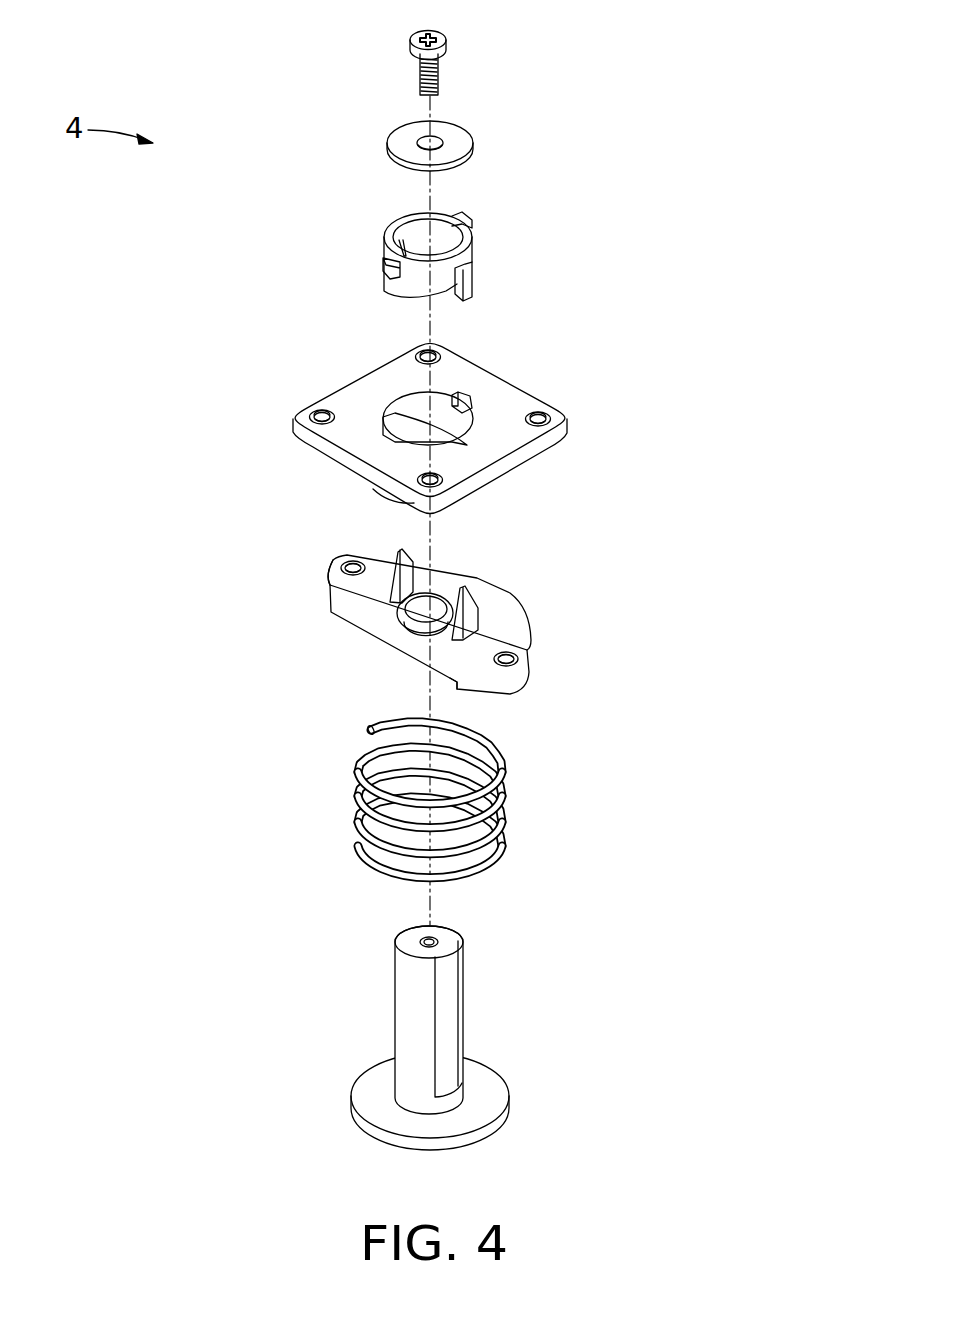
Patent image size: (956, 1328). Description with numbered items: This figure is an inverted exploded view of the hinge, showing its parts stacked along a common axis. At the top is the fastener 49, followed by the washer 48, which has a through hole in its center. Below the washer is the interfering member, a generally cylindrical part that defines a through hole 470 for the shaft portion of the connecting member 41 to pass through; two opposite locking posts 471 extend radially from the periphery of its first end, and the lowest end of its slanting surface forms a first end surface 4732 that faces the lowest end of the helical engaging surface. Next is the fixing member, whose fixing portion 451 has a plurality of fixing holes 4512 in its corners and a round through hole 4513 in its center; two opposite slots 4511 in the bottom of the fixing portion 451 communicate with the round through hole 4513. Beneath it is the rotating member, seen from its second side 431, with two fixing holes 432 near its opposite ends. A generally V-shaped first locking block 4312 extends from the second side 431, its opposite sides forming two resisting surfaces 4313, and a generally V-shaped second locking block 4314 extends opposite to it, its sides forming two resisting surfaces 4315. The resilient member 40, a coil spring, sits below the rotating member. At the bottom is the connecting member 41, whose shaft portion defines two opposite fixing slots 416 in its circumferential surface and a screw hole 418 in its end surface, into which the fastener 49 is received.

The fastener 49 is at (444, 54).
The washer 48 is at (455, 136).
The through hole 470 is at (422, 233).
The locking posts 471 is at (384, 266).
The first end surface 4732 is at (470, 296).
The fixing portion 451 is at (433, 402).
The slots 4511 is at (465, 396).
The fixing holes 4512 is at (320, 411).
The round through hole 4513 is at (398, 414).
The second side 431 is at (417, 602).
The first locking block 4312 is at (398, 570).
The resisting surfaces 4313 is at (333, 580).
The second locking block 4314 is at (478, 600).
The resisting surfaces 4315 is at (465, 637).
The fixing holes 432 is at (522, 662).
The resilient member 40 is at (507, 803).
The connecting member 41 is at (467, 1013).
The fixing slots 416 is at (445, 1013).
The screw hole 418 is at (433, 938).